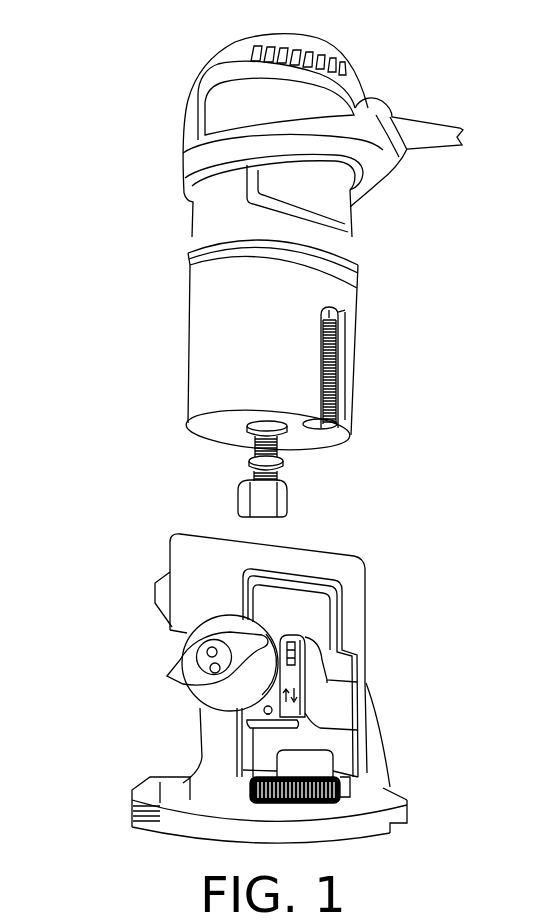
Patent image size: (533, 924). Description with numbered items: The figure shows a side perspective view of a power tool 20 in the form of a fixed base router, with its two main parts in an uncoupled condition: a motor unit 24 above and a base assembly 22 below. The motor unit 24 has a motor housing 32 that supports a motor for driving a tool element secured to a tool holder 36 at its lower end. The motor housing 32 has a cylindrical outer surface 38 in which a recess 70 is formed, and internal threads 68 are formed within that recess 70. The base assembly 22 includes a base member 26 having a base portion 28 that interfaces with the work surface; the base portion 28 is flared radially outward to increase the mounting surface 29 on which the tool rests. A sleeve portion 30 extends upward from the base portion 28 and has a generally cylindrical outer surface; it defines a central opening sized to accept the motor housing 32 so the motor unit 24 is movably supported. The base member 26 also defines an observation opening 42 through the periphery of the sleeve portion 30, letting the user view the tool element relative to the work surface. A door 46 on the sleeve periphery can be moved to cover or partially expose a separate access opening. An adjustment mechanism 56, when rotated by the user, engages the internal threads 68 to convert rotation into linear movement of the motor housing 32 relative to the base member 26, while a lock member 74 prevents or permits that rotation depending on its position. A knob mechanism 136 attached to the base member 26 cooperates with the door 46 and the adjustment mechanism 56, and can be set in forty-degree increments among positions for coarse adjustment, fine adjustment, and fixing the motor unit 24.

The power tool 20 is at (118, 142).
The base assembly 22 is at (400, 623).
The motor unit 24 is at (155, 315).
The base member 26 is at (368, 570).
The base portion 28 is at (397, 815).
The mounting surface 29 is at (370, 840).
The sleeve portion 30 is at (377, 720).
The motor housing 32 is at (185, 380).
The tool holder 36 is at (287, 498).
The cylindrical outer surface 38 is at (350, 343).
The observation opening 42 is at (200, 710).
The door 46 is at (343, 693).
The adjustment mechanism 56 is at (247, 783).
The internal threads 68 is at (335, 393).
The recess 70 is at (327, 307).
The lock member 74 is at (345, 760).
The knob mechanism 136 is at (173, 660).